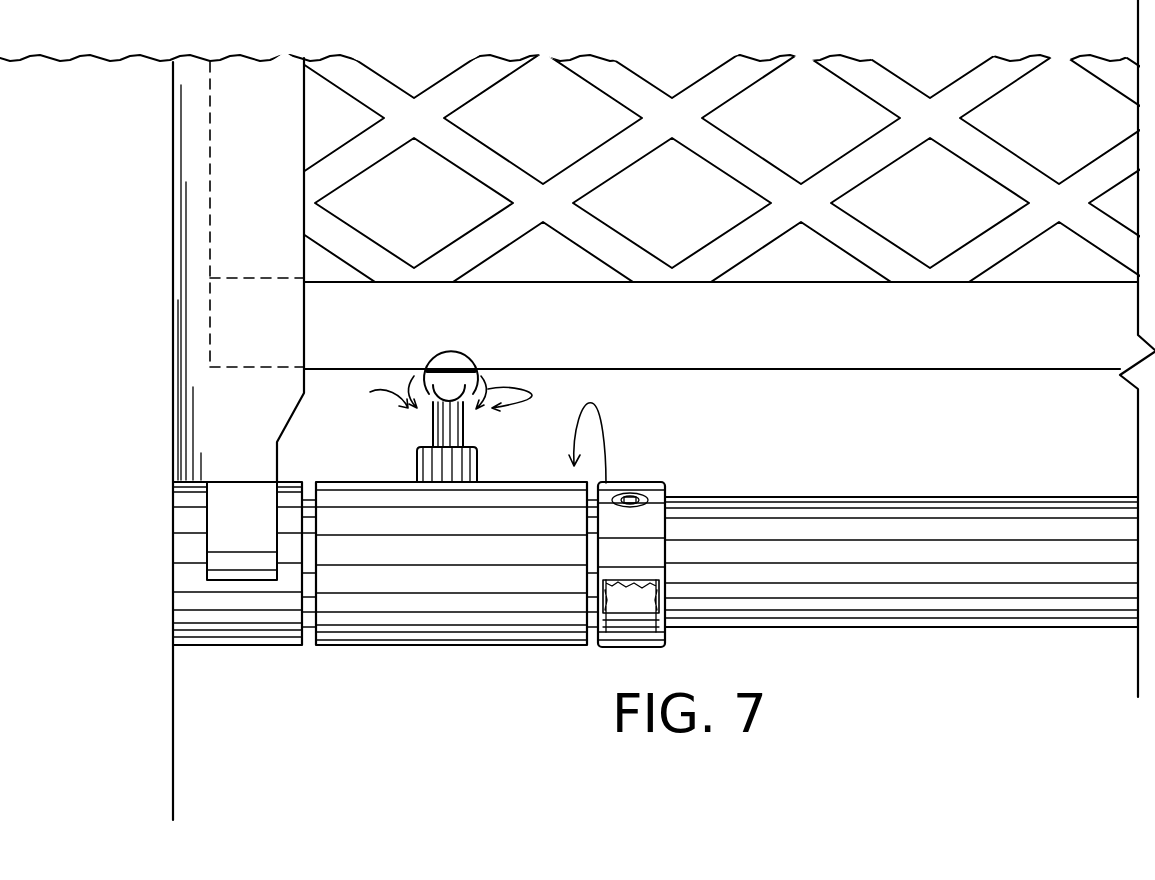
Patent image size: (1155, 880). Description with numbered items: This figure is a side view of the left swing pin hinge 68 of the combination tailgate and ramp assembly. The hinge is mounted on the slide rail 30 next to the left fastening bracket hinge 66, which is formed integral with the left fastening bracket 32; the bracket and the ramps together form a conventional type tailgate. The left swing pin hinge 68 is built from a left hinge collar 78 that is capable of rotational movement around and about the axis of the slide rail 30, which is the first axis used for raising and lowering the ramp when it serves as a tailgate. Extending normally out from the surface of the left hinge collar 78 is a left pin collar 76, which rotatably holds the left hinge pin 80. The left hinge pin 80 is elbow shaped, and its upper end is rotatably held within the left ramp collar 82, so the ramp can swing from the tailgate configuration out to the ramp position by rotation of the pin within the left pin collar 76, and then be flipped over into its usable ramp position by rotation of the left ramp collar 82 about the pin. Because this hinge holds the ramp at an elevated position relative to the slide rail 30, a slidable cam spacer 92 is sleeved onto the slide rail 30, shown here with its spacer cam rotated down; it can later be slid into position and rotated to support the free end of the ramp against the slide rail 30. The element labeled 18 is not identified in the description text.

The horizontal rail 18 is at (735, 350).
The slide rail 30 is at (893, 508).
The left fastening bracket 32 is at (262, 257).
The left fastening bracket hinge 66 is at (224, 618).
The left swing pin hinge 68 is at (456, 562).
The left pin collar 76 is at (478, 457).
The left hinge collar 78 is at (464, 625).
The left hinge pin 80 is at (466, 418).
The left ramp collar 82 is at (462, 353).
The slidable cam spacer 92 is at (647, 482).